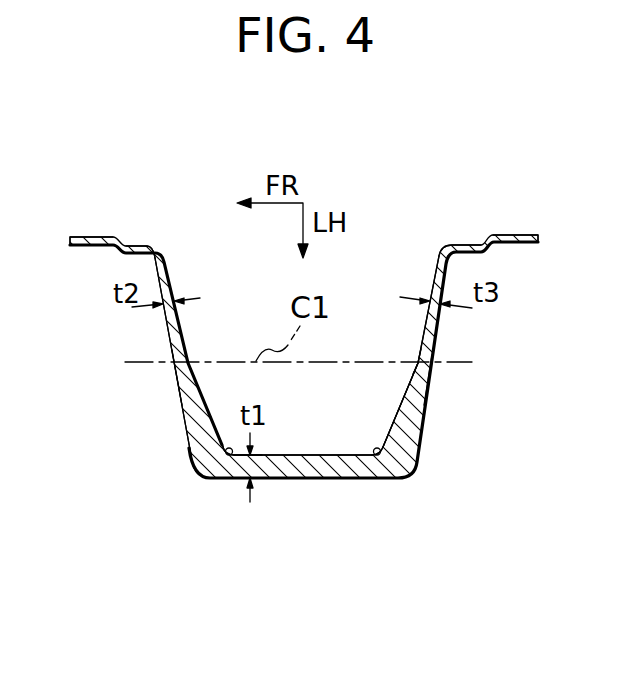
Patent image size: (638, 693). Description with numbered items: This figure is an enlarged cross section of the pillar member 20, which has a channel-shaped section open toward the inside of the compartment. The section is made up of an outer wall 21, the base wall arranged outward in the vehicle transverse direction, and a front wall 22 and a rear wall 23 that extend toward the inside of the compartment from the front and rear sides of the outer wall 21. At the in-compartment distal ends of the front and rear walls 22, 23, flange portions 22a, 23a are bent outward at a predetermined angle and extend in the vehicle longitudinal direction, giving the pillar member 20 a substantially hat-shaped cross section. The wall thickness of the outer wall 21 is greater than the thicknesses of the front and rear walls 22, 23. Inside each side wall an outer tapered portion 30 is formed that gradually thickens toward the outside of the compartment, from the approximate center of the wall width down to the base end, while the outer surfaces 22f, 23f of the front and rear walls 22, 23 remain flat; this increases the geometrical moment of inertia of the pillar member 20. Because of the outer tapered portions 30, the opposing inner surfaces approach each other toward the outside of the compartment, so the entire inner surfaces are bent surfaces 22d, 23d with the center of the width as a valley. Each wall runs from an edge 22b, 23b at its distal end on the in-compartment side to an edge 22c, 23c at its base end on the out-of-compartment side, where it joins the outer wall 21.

The pillar member 20 is at (178, 449).
The outer wall 21 is at (315, 472).
The front wall 22 is at (170, 334).
The flange portion 22a is at (95, 237).
The edge 22b is at (160, 247).
The edge 22c is at (232, 455).
The bent surface 22d is at (190, 361).
The outer surface 22f is at (180, 388).
The rear wall 23 is at (442, 333).
The flange portion 23a is at (508, 235).
The edge 23b is at (445, 247).
The edge 23c is at (387, 480).
The bent surface 23d is at (416, 360).
The outer surface 23f is at (432, 395).
The outer tapered portion 30 is at (185, 420).